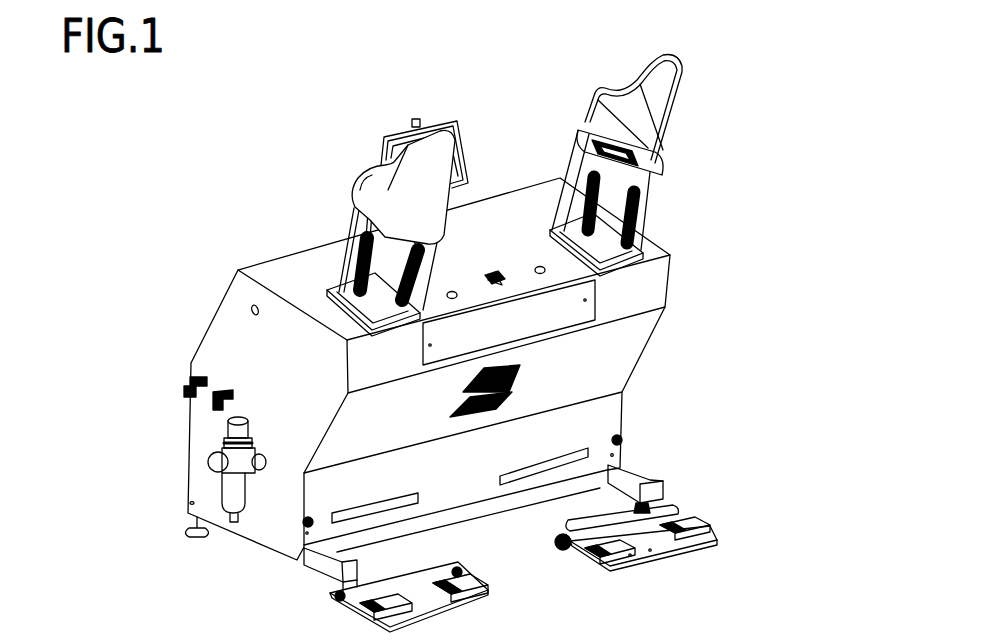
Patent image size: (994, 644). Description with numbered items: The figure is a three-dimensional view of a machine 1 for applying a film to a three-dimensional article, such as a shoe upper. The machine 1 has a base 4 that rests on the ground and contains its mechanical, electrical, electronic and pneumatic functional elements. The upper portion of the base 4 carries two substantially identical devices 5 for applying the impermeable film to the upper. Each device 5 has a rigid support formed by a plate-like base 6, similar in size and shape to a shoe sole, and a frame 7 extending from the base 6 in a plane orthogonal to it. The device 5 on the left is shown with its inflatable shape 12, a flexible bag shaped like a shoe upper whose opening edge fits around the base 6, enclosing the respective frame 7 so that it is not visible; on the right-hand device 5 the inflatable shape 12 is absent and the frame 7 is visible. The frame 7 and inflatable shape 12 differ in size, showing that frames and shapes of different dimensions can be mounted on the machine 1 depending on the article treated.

The machine 1 is at (735, 52).
The base 4 is at (648, 372).
The device 5 is at (350, 142).
The base 6 is at (578, 138).
The frame 7 is at (693, 103).
The inflatable shape 12 is at (352, 208).